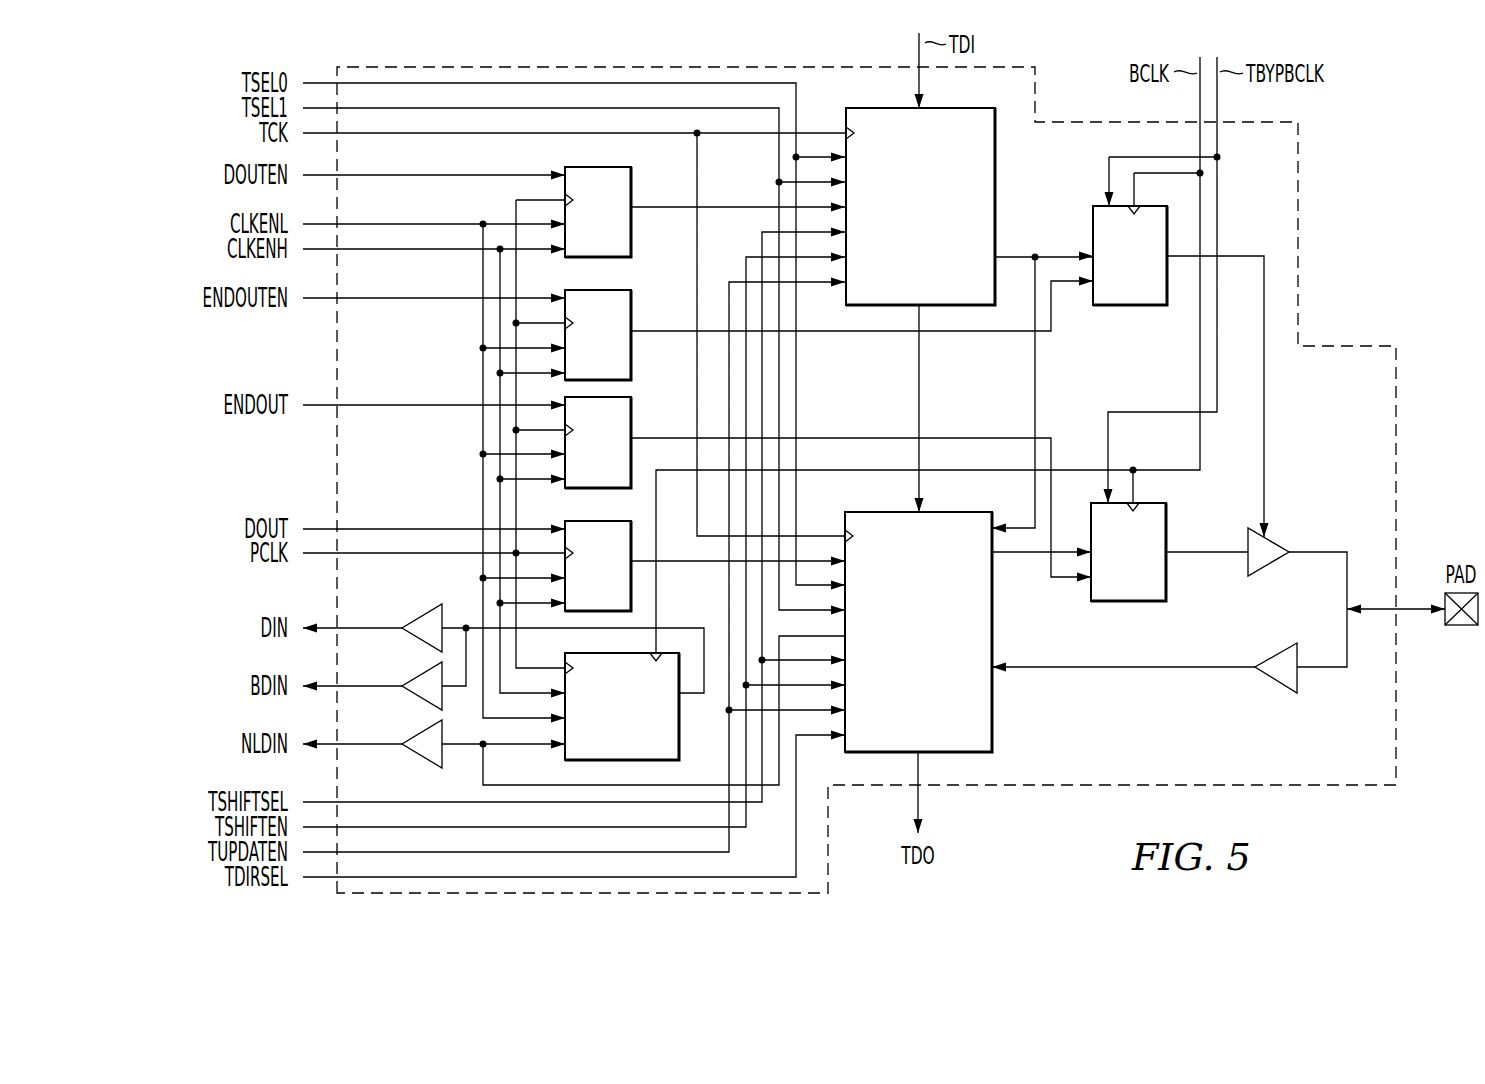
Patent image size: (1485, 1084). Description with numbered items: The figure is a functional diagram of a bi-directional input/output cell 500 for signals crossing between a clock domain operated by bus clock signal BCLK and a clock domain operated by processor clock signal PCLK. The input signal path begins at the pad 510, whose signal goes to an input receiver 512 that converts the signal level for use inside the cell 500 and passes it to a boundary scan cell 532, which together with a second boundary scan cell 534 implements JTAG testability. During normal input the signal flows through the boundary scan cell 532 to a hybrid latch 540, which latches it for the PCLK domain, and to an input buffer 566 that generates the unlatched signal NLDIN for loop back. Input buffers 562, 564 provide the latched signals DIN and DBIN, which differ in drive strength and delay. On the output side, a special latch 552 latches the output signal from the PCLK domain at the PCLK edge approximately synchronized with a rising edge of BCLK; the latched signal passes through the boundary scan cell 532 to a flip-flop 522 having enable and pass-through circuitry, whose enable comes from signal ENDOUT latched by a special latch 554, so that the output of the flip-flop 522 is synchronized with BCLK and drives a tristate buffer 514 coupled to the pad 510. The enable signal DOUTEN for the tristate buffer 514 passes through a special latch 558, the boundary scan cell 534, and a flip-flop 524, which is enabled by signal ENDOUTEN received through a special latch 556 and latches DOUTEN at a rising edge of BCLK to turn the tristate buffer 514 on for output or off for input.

The bi-directional input/output cell 500 is at (1362, 155).
The pad 510 is at (1462, 625).
The input receiver 512 is at (1276, 684).
The tristate buffer 514 is at (1272, 538).
The flip-flop 522 is at (1140, 601).
The flip-flop 524 is at (1145, 305).
The boundary scan cell 532 is at (992, 713).
The boundary scan cell 534 is at (995, 196).
The hybrid latch 540 is at (679, 728).
The special latch 552 is at (578, 521).
The special latch 554 is at (632, 419).
The special latch 556 is at (632, 314).
The special latch 558 is at (632, 191).
The input buffer 562 is at (424, 615).
The input buffer 564 is at (424, 673).
The input buffer 566 is at (424, 731).